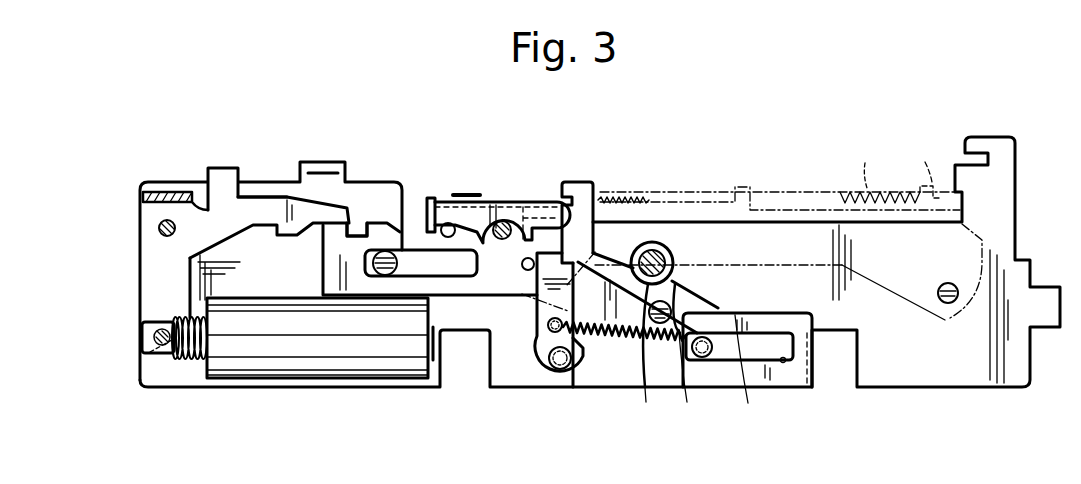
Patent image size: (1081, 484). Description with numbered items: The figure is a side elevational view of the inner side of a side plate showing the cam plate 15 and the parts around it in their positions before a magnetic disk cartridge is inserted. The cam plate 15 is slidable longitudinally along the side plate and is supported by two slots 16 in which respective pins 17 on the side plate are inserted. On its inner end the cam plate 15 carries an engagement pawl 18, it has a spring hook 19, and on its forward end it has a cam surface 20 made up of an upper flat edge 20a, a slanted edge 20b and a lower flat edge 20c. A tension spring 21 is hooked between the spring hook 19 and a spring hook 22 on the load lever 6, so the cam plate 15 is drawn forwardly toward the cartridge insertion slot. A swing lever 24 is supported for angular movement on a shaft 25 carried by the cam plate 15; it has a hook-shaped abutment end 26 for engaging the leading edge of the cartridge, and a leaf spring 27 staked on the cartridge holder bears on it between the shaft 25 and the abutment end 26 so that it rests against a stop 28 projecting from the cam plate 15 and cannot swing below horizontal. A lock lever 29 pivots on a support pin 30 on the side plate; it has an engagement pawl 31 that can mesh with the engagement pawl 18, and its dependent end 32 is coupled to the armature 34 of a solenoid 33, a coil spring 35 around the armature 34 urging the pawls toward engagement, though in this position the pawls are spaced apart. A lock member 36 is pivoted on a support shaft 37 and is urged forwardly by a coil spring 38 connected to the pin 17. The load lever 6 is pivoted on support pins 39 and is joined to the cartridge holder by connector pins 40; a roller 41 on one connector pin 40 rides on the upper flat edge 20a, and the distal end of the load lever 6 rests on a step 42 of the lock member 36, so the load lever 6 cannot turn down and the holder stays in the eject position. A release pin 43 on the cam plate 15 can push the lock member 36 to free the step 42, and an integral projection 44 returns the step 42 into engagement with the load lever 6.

The load lever 6 is at (997, 232).
The cam plate 15 is at (471, 298).
The slots 16 is at (413, 278).
The pins 17 is at (383, 276).
The engagement pawl 18 is at (350, 229).
The spring hook 19 is at (579, 181).
The cam surface 20 is at (781, 427).
The upper flat edge 20a is at (642, 409).
The slanted edge 20b is at (700, 381).
The lower flat edge 20c is at (753, 372).
The tension spring 21 is at (780, 174).
The spring hook 22 is at (925, 167).
The swing lever 24 is at (503, 202).
The shaft 25 is at (506, 226).
The abutment end 26 is at (432, 197).
The leaf spring 27 is at (467, 193).
The stop 28 is at (447, 221).
The lock lever 29 is at (259, 194).
The support pin 30 is at (158, 229).
The engagement pawl 31 is at (293, 237).
The dependent end 32 is at (158, 292).
The solenoid 33 is at (308, 380).
The armature 34 is at (163, 354).
The coil spring 35 is at (190, 362).
The lock member 36 is at (536, 322).
The support shaft 37 is at (558, 371).
The coil spring 38 is at (617, 336).
The support pins 39 is at (947, 304).
The connector pins 40 is at (650, 243).
The roller 41 is at (667, 244).
The step 42 is at (594, 254).
The release pin 43 is at (681, 300).
The projection 44 is at (527, 271).